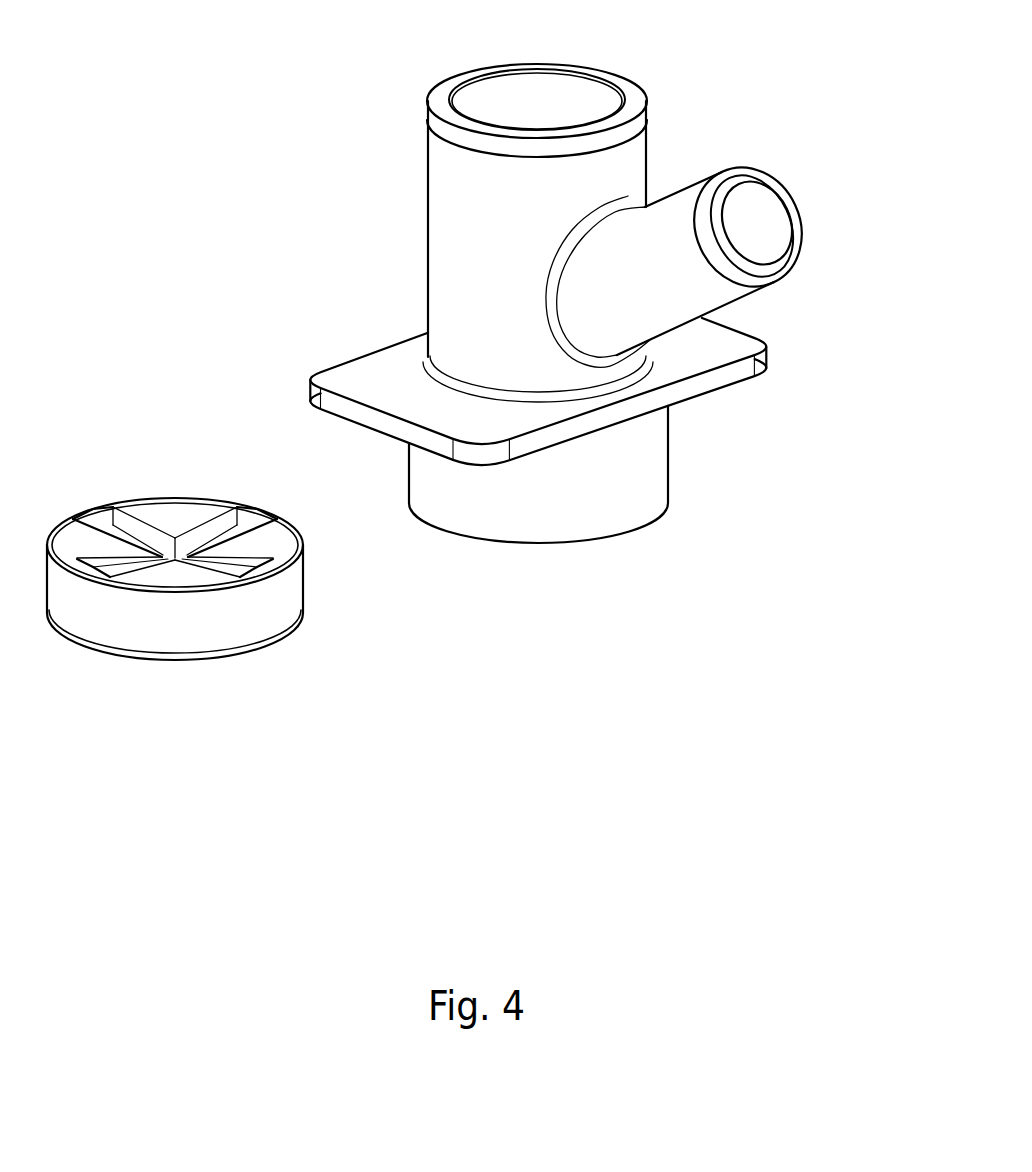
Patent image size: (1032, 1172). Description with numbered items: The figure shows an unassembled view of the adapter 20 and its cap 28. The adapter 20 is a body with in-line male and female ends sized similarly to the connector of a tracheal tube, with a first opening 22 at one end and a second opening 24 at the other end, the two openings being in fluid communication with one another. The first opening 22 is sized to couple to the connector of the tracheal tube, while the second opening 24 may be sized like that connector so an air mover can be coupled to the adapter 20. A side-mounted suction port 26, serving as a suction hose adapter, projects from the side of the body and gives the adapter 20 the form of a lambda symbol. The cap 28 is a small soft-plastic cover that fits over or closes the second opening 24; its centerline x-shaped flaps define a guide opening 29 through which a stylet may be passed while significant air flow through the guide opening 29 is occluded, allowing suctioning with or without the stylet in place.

The adapter 20 is at (768, 103).
The first opening 22 is at (545, 542).
The second opening 24 is at (640, 110).
The side-mounted suction port 26 is at (787, 272).
The cap 28 is at (197, 660).
The guide opening 29 is at (176, 557).